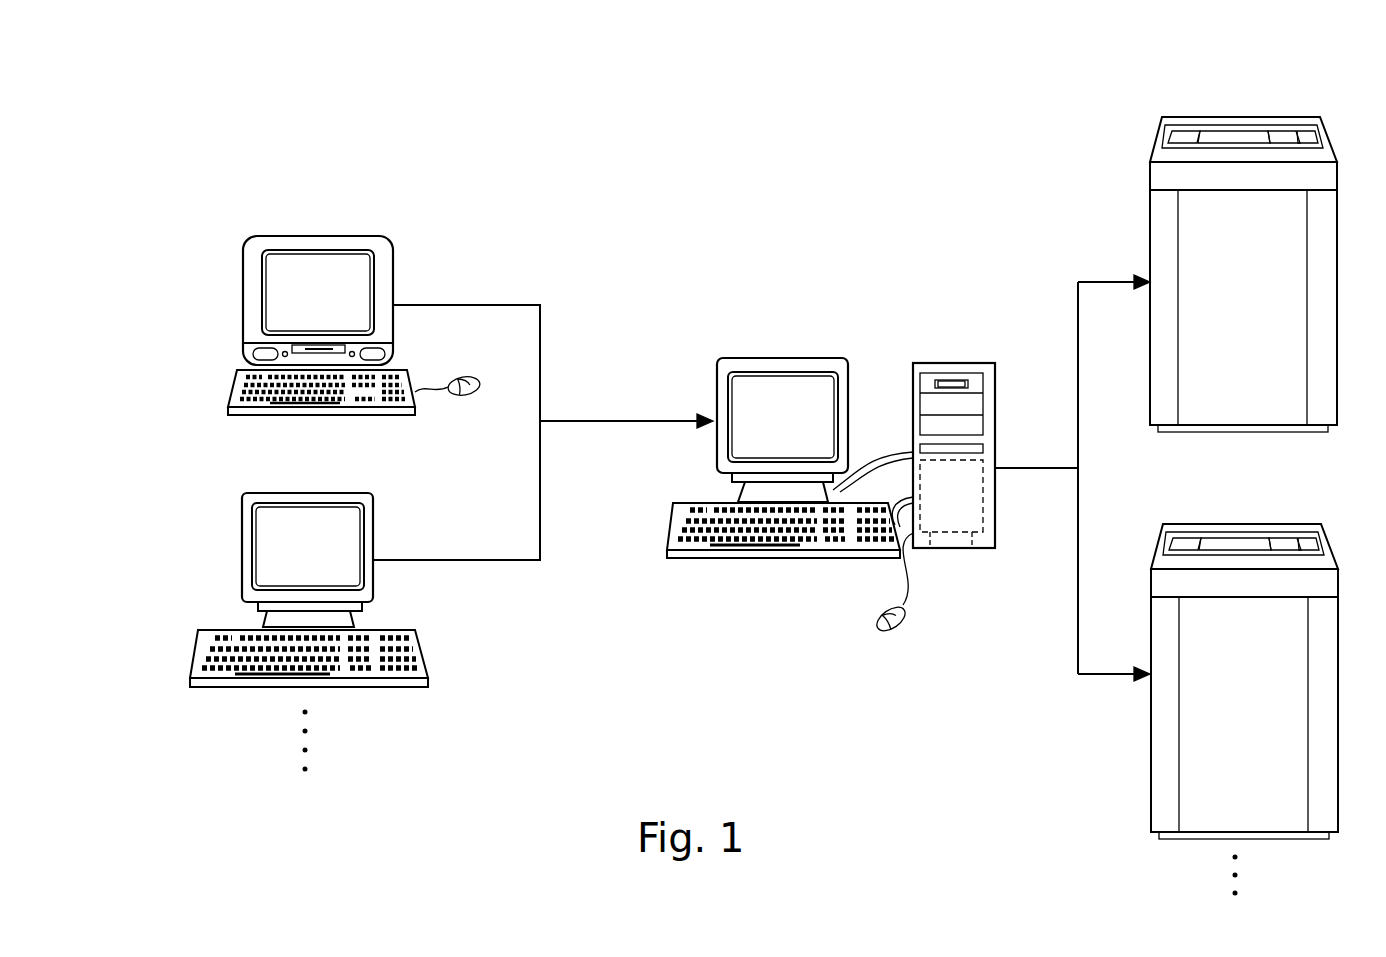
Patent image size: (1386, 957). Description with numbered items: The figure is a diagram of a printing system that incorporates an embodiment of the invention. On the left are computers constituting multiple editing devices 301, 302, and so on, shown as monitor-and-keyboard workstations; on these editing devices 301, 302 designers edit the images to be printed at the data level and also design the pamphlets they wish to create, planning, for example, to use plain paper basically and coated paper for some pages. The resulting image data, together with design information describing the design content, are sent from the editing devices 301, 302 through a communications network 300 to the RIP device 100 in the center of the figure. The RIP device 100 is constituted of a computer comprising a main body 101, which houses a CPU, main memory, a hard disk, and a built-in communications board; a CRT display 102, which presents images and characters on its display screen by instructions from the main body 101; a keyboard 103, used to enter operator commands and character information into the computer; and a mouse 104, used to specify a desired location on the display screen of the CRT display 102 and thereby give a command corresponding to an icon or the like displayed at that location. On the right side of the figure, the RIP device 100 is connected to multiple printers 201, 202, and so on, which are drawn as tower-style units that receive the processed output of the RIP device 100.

The RIP device 100 is at (880, 340).
The main body 101 is at (957, 362).
The CRT display 102 is at (770, 358).
The keyboard 103 is at (822, 560).
The mouse 104 is at (885, 633).
The printer 201 is at (1232, 117).
The printer 202 is at (1232, 524).
The communications network 300 is at (540, 357).
The editing device 301 is at (243, 280).
The editing device 302 is at (243, 548).